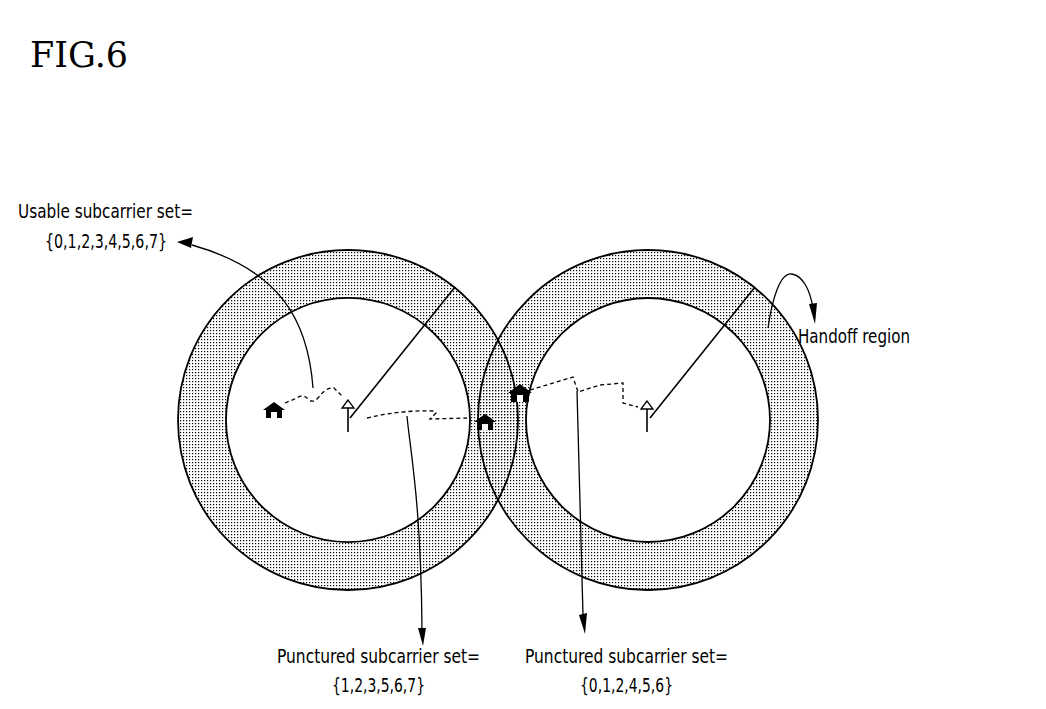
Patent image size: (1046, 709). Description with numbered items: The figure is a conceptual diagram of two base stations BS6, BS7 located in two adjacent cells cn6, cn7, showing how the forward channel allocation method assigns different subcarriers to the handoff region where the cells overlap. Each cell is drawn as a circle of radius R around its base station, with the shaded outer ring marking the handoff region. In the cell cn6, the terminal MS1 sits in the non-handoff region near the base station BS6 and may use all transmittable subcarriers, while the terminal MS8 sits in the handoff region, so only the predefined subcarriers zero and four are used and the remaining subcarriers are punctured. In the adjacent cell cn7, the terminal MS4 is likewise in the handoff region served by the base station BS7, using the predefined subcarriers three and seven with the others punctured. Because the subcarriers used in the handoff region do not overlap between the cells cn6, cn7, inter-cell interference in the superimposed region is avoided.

The terminal MS1 is at (277, 428).
The terminal MS4 is at (521, 381).
The terminal MS8 is at (488, 437).
The base station BS6 is at (349, 428).
The base station BS7 is at (646, 429).
The cell cn6 is at (348, 420).
The cell cn7 is at (648, 420).
The cell radius R is at (552, 352).